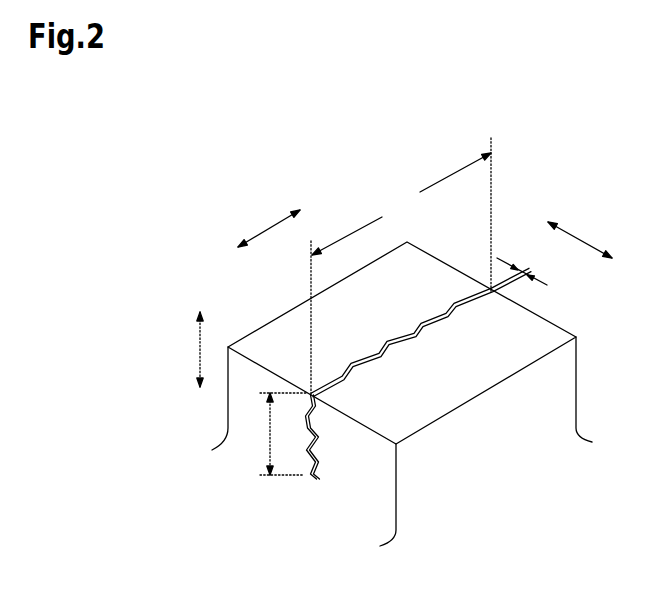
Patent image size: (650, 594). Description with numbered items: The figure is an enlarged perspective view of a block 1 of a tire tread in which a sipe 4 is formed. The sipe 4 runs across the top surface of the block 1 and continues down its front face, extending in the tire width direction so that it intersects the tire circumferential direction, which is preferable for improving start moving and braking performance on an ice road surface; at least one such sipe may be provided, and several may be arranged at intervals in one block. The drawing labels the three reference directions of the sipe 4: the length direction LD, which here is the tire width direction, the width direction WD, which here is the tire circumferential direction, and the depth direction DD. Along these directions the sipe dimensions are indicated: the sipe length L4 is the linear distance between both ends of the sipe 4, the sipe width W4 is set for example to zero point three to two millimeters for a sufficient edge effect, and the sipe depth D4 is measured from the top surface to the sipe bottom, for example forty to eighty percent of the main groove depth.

The block 1 is at (508, 358).
The sipe 4 is at (387, 360).
The length direction LD is at (267, 224).
The sipe length L4 is at (401, 266).
The width direction WD is at (581, 234).
The sipe width W4 is at (525, 264).
The depth direction DD is at (180, 349).
The sipe depth D4 is at (280, 434).